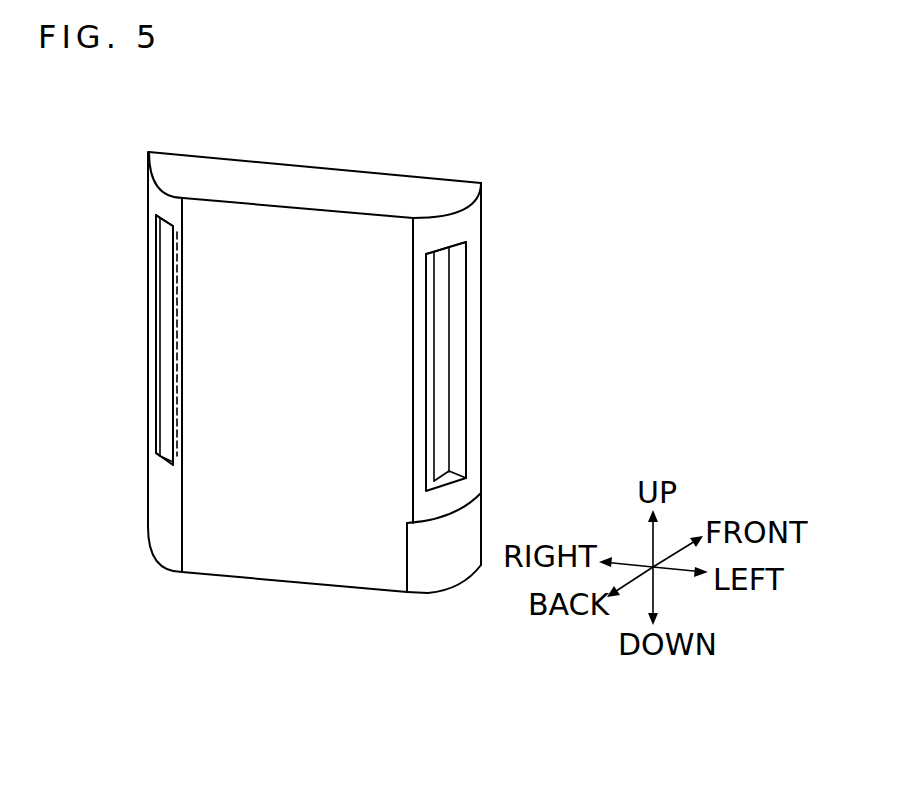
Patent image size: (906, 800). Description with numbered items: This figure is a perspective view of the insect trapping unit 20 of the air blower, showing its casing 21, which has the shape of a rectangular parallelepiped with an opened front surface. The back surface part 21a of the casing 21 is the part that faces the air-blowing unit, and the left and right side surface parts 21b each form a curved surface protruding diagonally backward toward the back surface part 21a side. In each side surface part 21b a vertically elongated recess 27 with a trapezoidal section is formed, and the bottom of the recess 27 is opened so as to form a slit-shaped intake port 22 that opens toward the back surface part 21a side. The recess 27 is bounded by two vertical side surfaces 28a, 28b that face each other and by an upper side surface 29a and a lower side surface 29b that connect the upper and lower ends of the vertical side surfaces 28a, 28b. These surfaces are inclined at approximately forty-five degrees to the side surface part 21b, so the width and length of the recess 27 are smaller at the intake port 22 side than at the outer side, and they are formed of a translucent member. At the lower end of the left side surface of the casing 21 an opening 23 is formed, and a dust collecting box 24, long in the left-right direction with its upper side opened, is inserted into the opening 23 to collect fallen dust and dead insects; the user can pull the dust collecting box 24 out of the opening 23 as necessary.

The insect trapping unit 20 is at (325, 590).
The casing 21 is at (203, 574).
The back surface part 21a is at (262, 563).
The side surface part 21b is at (160, 487).
The intake port 22 is at (170, 393).
The opening 23 is at (418, 585).
The dust collecting box 24 is at (450, 570).
The recess 27 is at (165, 277).
The vertical side surface 28a is at (165, 325).
The vertical side surface 28b is at (180, 350).
The upper side surface 29a is at (165, 215).
The lower side surface 29b is at (165, 448).